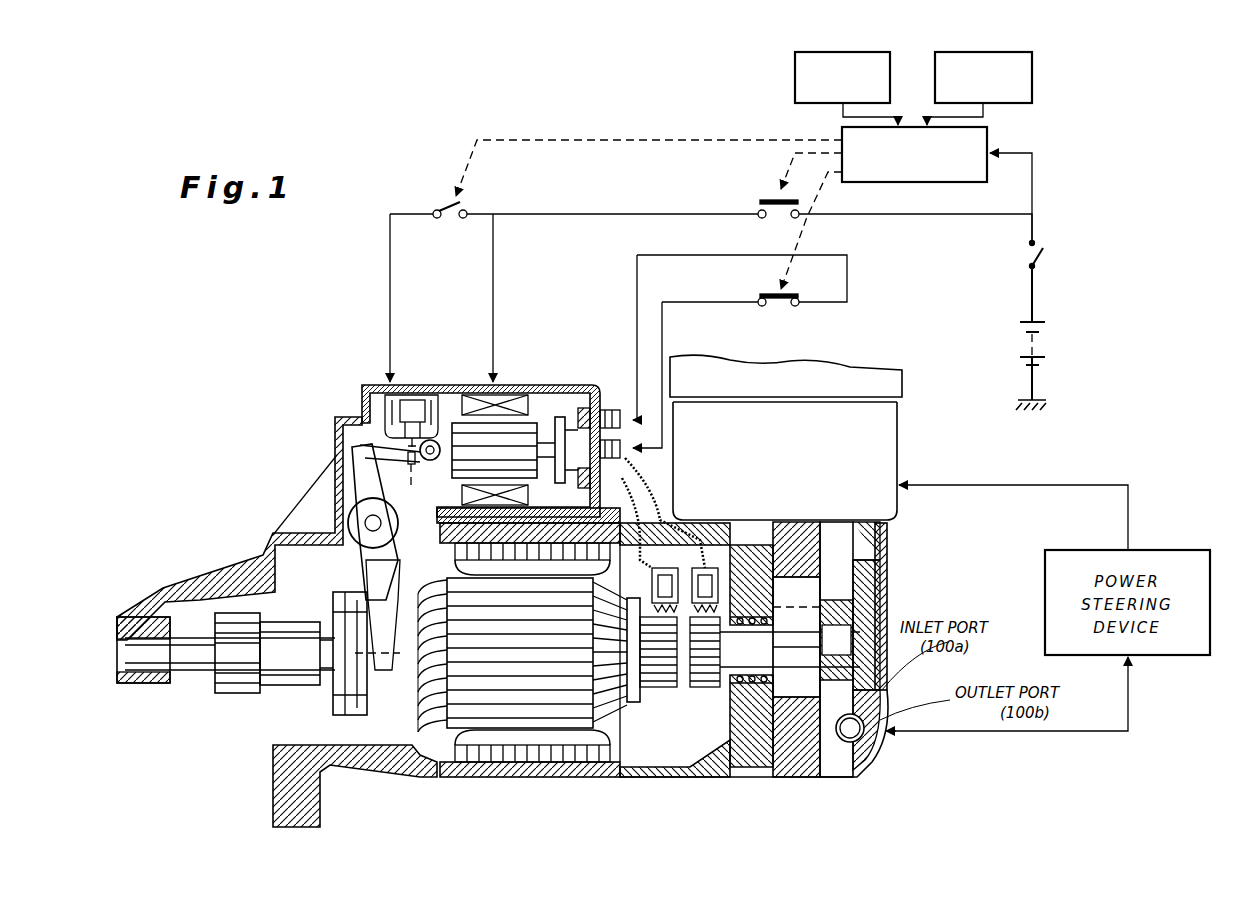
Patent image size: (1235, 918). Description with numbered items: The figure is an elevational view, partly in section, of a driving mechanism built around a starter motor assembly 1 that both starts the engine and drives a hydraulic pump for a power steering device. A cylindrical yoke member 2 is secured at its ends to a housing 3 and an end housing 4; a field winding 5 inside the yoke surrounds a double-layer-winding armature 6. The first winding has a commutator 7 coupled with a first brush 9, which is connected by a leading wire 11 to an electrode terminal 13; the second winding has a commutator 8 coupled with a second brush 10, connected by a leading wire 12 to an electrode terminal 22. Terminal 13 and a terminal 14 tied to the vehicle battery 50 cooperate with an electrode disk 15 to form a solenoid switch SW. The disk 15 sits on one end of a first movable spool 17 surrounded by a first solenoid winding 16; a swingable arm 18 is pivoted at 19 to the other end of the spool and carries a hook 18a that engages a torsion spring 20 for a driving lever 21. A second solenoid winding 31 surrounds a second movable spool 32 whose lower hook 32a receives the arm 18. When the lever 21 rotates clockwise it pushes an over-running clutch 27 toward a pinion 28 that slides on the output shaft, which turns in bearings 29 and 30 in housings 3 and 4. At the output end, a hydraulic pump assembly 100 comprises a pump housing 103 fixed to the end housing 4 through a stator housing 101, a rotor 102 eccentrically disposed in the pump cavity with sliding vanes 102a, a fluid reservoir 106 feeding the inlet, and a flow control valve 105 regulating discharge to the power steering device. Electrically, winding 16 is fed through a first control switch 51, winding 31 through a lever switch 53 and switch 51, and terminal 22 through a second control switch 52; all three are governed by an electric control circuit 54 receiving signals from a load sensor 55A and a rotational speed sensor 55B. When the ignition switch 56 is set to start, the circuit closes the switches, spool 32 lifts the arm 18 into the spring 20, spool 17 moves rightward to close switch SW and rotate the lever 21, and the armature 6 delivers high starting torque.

The starter motor assembly 1 is at (424, 788).
The yoke member 2 is at (548, 764).
The housing 3 is at (275, 790).
The end housing 4 is at (718, 770).
The field winding 5 is at (565, 754).
The armature 6 is at (480, 720).
The commutator 7 is at (651, 690).
The commutator 8 is at (714, 690).
The first brush 9 is at (661, 690).
The second brush 10 is at (694, 690).
The leading wire 11 is at (672, 545).
The leading wire 12 is at (702, 545).
The electrode terminal 13 is at (580, 488).
The electrode terminal 14 is at (590, 410).
The electrode disk 15 is at (553, 416).
The first solenoid winding 16 is at (502, 398).
The first movable spool 17 is at (524, 435).
The swingable arm 18 is at (362, 415).
The hook 18a is at (340, 430).
The pivot 19 is at (438, 443).
The torsion spring 20 is at (357, 493).
The driving lever 21 is at (367, 575).
The electrode terminal 22 is at (628, 446).
The over-running clutch 27 is at (352, 716).
The pinion 28 is at (232, 693).
The bearing 29 is at (140, 682).
The bearing 30 is at (741, 700).
The second solenoid winding 31 is at (434, 397).
The second movable spool 32 is at (408, 395).
The hook 32a is at (416, 470).
The vehicle battery 50 is at (1047, 326).
The first control switch 51 is at (765, 200).
The second control switch 52 is at (800, 304).
The lever switch 53 is at (441, 200).
The electric control circuit 54 is at (842, 130).
The load sensor 55A is at (797, 55).
The rotational speed sensor 55B is at (1032, 56).
The ignition switch 56 is at (1041, 253).
The hydraulic pump assembly 100 is at (860, 782).
The stator housing 101 is at (802, 776).
The rotor 102 is at (890, 693).
The vanes 102a is at (862, 592).
The pump housing 103 is at (882, 568).
The flow control valve 105 is at (878, 726).
The fluid reservoir 106 is at (897, 447).
The solenoid switch SW is at (574, 412).